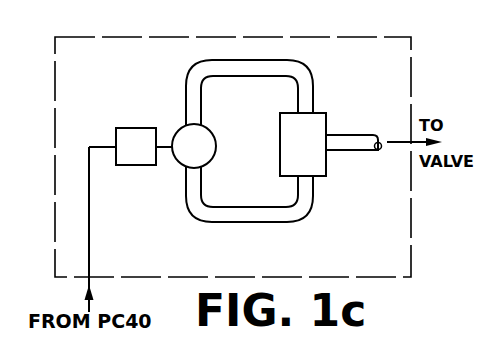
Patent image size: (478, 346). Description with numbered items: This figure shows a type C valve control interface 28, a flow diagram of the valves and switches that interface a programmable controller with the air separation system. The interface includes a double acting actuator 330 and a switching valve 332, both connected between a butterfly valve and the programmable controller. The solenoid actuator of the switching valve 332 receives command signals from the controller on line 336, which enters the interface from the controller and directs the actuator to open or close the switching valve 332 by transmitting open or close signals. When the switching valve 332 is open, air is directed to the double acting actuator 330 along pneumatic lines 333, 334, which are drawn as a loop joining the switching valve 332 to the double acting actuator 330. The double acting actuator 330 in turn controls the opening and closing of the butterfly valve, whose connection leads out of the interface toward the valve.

The type C valve control interface 28 is at (290, 37).
The double acting actuator 330 is at (320, 113).
The switching valve 332 is at (178, 130).
The pneumatic line 333 is at (268, 73).
The pneumatic line 334 is at (272, 211).
The line 336 is at (89, 242).